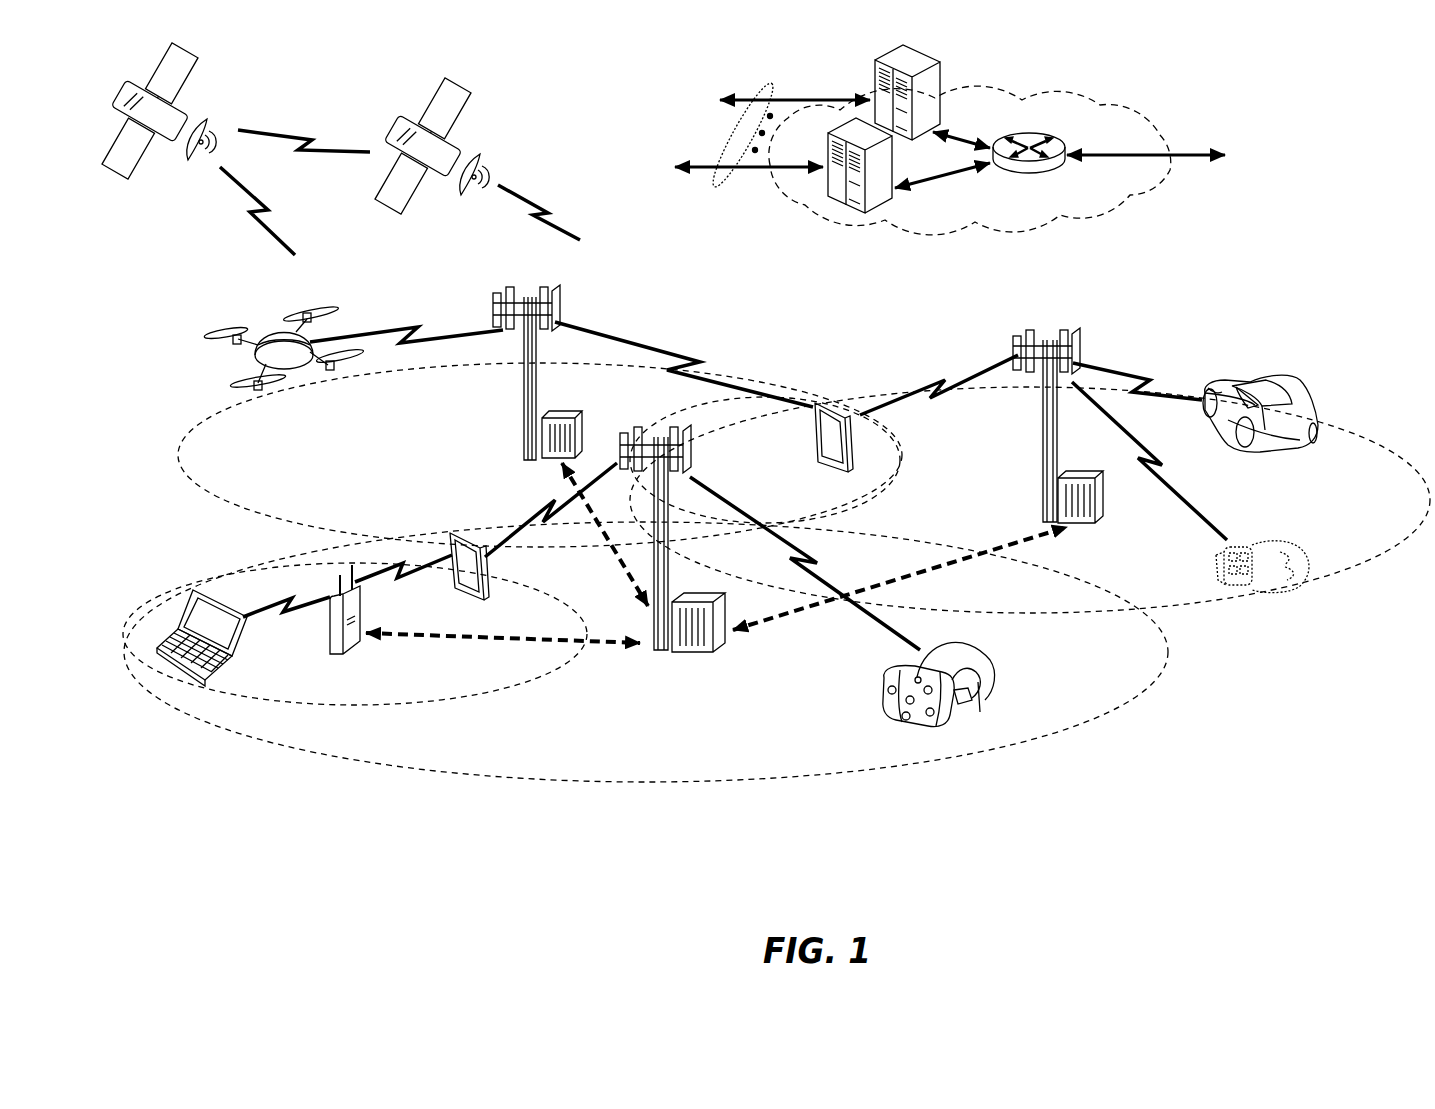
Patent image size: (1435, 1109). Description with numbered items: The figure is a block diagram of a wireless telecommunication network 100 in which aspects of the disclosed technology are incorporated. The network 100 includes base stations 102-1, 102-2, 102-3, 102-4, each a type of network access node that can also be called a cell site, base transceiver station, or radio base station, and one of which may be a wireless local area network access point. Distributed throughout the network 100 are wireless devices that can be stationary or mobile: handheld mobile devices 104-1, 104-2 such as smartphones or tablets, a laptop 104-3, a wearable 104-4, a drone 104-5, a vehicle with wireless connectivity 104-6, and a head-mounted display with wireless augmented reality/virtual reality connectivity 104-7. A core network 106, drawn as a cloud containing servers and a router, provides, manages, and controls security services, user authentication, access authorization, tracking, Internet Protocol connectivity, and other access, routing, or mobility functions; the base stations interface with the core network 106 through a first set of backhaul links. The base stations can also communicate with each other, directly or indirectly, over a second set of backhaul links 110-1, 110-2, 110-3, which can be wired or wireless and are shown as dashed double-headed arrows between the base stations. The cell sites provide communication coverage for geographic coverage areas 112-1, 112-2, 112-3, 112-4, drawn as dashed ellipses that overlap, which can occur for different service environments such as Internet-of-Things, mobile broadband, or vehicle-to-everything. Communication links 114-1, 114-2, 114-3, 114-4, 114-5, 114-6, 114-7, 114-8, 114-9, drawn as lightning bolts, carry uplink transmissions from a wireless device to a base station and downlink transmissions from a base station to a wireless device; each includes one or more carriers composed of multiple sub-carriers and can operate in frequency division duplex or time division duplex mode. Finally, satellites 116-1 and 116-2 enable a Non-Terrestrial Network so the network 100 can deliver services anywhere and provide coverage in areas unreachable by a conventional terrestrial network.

The wireless telecommunication network 100 is at (1332, 150).
The base station 102-1 is at (658, 653).
The base station 102-2 is at (521, 405).
The base station 102-3 is at (1040, 442).
The base station 102-4 is at (330, 640).
The handheld mobile device 104-1 is at (483, 580).
The handheld mobile device 104-2 is at (813, 442).
The laptop 104-3 is at (180, 680).
The wearable 104-4 is at (1243, 542).
The drone 104-5 is at (292, 373).
The vehicle with wireless connectivity 104-6 is at (1283, 387).
The head-mounted display 104-7 is at (987, 667).
The core network 106 is at (1058, 220).
The backhaul link 110-1 is at (405, 640).
The backhaul link 110-2 is at (963, 558).
The backhaul link 110-3 is at (623, 563).
The geographic coverage area 112-1 is at (589, 786).
The geographic coverage area 112-2 is at (465, 693).
The geographic coverage area 112-3 is at (243, 512).
The geographic coverage area 112-4 is at (1338, 440).
The communication link 114-1 is at (817, 563).
The communication link 114-2 is at (550, 506).
The communication link 114-3 is at (260, 612).
The communication link 114-4 is at (403, 582).
The communication link 114-5 is at (410, 326).
The communication link 114-6 is at (693, 362).
The communication link 114-7 is at (937, 382).
The communication link 114-8 is at (1163, 484).
The communication link 114-9 is at (1140, 366).
The satellite 116-1 is at (205, 124).
The satellite 116-2 is at (478, 166).